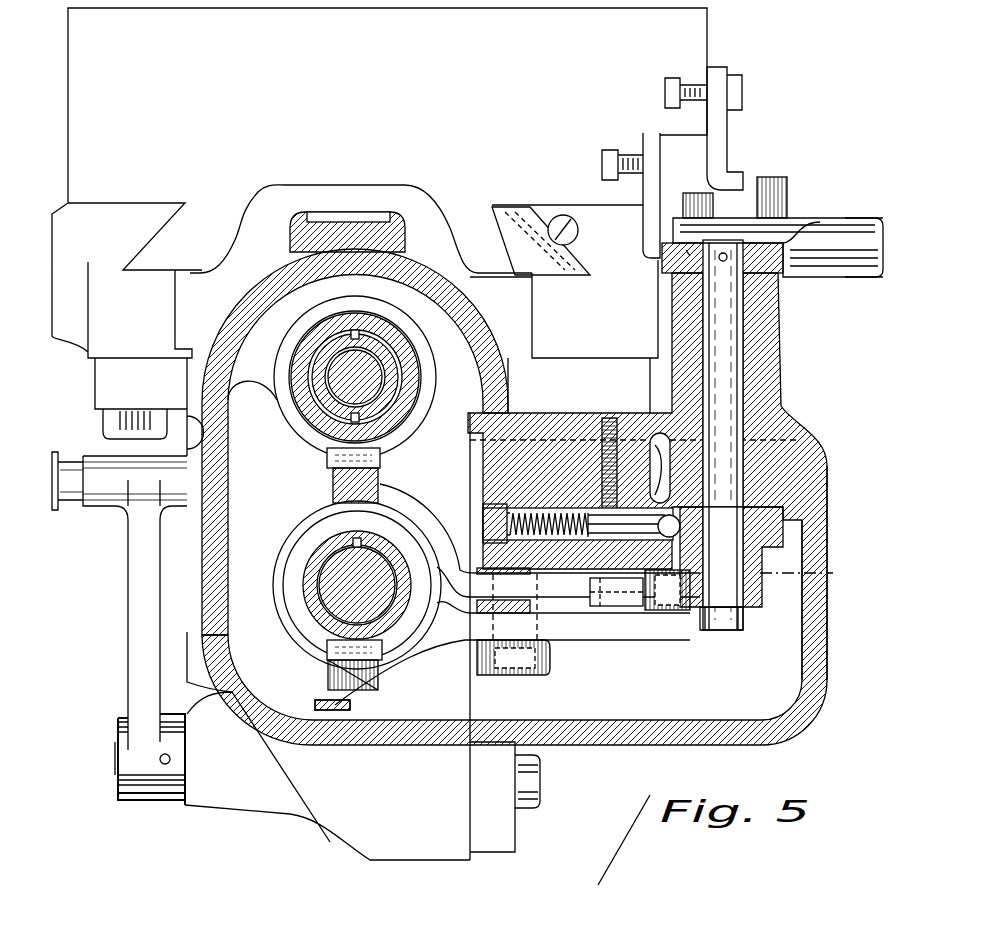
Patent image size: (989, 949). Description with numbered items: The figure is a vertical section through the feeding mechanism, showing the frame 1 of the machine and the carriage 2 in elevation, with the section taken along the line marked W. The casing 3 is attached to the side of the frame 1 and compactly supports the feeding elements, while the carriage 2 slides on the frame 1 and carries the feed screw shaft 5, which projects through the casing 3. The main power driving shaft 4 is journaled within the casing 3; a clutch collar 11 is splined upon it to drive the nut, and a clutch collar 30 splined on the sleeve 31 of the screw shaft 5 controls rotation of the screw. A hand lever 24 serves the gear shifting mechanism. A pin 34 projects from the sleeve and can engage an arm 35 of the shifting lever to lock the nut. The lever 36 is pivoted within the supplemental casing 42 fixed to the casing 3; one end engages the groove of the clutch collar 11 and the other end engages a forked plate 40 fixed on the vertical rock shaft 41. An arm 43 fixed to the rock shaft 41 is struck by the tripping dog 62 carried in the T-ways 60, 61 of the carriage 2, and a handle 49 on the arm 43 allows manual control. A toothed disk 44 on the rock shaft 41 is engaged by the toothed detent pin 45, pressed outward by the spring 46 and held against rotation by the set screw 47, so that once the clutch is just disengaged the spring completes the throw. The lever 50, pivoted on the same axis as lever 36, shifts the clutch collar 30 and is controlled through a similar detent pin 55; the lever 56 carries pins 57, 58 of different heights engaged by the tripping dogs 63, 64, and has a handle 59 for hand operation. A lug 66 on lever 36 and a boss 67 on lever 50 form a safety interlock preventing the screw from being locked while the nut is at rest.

The frame 1 is at (613, 302).
The carriage 2 is at (704, 53).
The casing 3 is at (348, 746).
The main power driving shaft 4 is at (322, 598).
The feed screw shaft 5 is at (373, 372).
The clutch collar 11 is at (295, 562).
The hand lever 24 is at (130, 638).
The clutch collar 30 is at (409, 365).
The sleeve 31 is at (398, 386).
The pin 34 is at (362, 682).
The arm 35 is at (327, 668).
The lever 36 is at (602, 632).
The forked plate 40 is at (745, 626).
The rock shaft 41 is at (737, 427).
The supplemental casing 42 is at (830, 655).
The arm 43 is at (686, 252).
The toothed disk 44 is at (775, 532).
The toothed detent pin 45 is at (672, 528).
The spring 46 is at (480, 512).
The set screw 47 is at (607, 420).
The handle 49 is at (846, 272).
The lever 50 is at (583, 633).
The detent pin 55 is at (642, 413).
The lever 56 is at (790, 222).
The pin 57 is at (680, 205).
The pin 58 is at (782, 190).
The handle 59 is at (850, 217).
The T-way 60 is at (665, 90).
The T-way 61 is at (602, 163).
The tripping dog 62 is at (650, 232).
The tripping dog 63 is at (725, 162).
The tripping dog 64 is at (676, 193).
The lug 66 is at (660, 610).
The boss 67 is at (600, 580).
The bearing / axis W is at (327, 447).